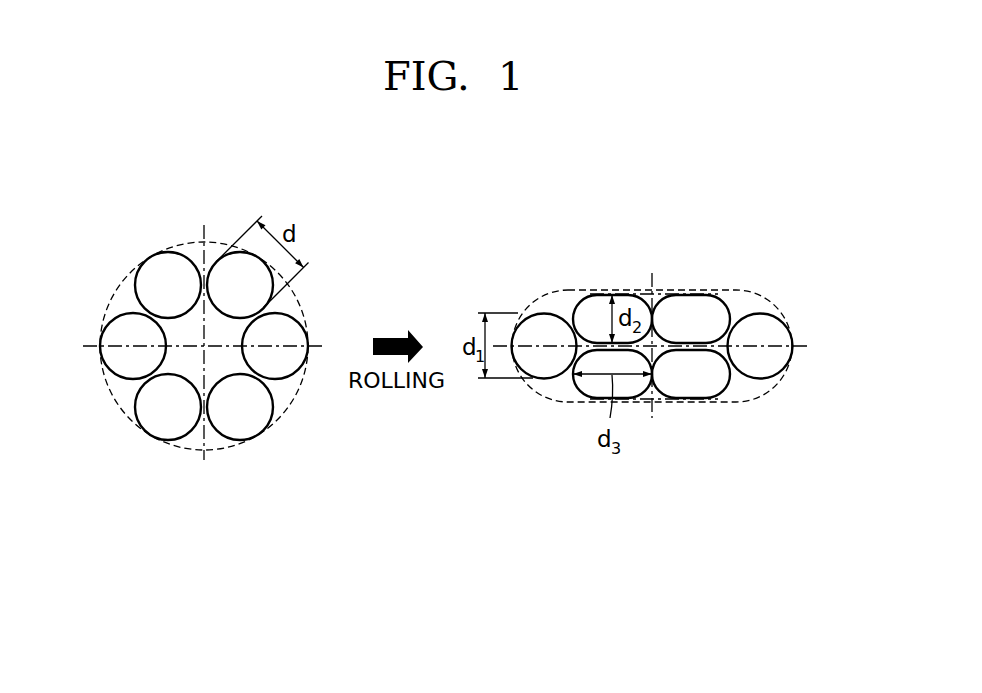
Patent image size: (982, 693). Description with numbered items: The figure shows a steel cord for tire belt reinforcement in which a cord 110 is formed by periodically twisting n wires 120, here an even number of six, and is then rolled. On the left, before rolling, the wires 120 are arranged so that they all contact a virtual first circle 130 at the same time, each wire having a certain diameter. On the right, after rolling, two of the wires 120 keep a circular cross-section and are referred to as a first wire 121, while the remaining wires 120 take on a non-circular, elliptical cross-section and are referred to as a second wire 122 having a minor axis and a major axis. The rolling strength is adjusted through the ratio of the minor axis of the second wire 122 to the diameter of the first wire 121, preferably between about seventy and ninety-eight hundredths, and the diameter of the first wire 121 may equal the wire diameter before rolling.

The cord 110 is at (425, 317).
The wires 120 is at (493, 316).
The first wire 121 is at (543, 372).
The second wire 122 is at (598, 302).
The virtual first circle 130 is at (115, 405).